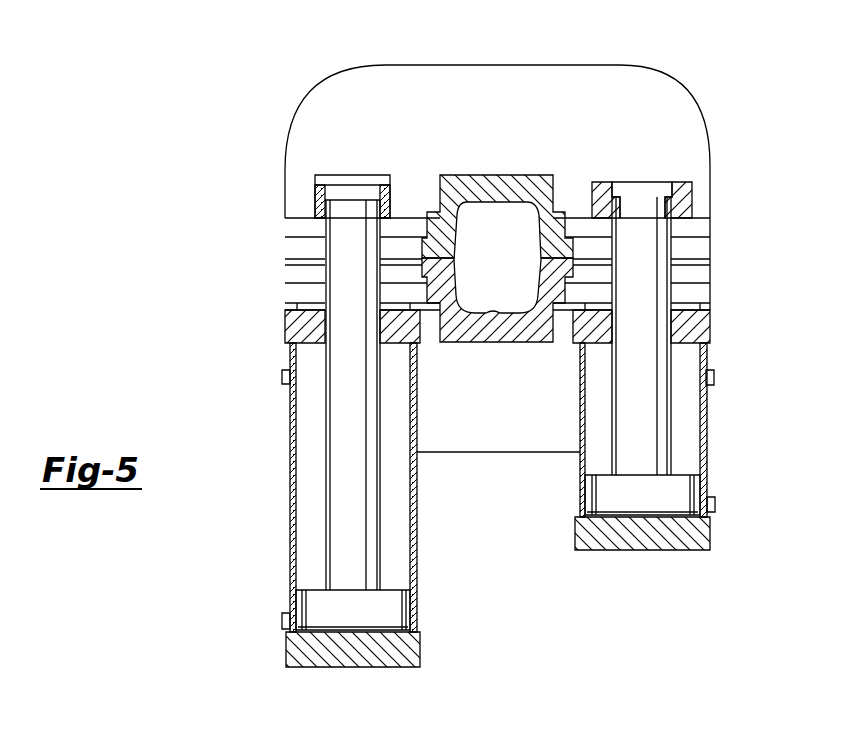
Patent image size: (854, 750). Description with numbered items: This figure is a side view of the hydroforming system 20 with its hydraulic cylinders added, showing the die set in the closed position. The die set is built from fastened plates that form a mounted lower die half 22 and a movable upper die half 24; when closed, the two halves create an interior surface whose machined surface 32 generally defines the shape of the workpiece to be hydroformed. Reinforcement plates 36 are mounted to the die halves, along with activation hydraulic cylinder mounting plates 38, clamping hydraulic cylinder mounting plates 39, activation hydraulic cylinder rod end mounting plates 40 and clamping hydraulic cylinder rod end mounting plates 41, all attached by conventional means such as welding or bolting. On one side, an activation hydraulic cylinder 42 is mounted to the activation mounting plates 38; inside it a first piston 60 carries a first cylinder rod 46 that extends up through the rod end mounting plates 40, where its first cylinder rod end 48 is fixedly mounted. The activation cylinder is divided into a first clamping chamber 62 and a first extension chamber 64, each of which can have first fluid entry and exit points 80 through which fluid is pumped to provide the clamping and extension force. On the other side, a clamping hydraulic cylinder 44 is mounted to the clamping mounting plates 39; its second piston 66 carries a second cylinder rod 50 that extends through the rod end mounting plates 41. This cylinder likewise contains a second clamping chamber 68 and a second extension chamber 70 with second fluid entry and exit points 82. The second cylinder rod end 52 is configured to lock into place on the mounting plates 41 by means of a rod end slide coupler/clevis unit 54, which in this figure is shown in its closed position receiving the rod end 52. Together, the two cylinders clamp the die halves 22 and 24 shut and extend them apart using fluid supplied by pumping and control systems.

The hydroforming system 20 is at (212, 137).
The lower die half 22 is at (518, 342).
The upper die half 24 is at (440, 192).
The machined surface 32 is at (497, 203).
The reinforcement plates 36 is at (640, 68).
The activation hydraulic cylinder mounting plates 38 is at (298, 293).
The clamping hydraulic cylinder mounting plates 39 is at (698, 293).
The activation hydraulic cylinder rod end mounting plates 40 is at (298, 252).
The clamping hydraulic cylinder rod end mounting plates 41 is at (698, 250).
The activation hydraulic cylinders 42 is at (417, 578).
The clamping hydraulic cylinders 44 is at (710, 478).
The first cylinder rod 46 is at (340, 510).
The first cylinder rod end 48 is at (350, 178).
The second cylinder rod 50 is at (640, 400).
The second cylinder rod end 52 is at (640, 192).
The rod end slide coupler/clevis unit 54 is at (600, 182).
The first piston 60 is at (385, 608).
The first clamping chamber 62 is at (300, 460).
The first extension chamber 64 is at (345, 634).
The second piston 66 is at (617, 497).
The second clamping chamber 68 is at (690, 440).
The second extension chamber 70 is at (650, 530).
The first fluid entry and exit points 80 is at (282, 377).
The second fluid entry and exit points 82 is at (715, 378).